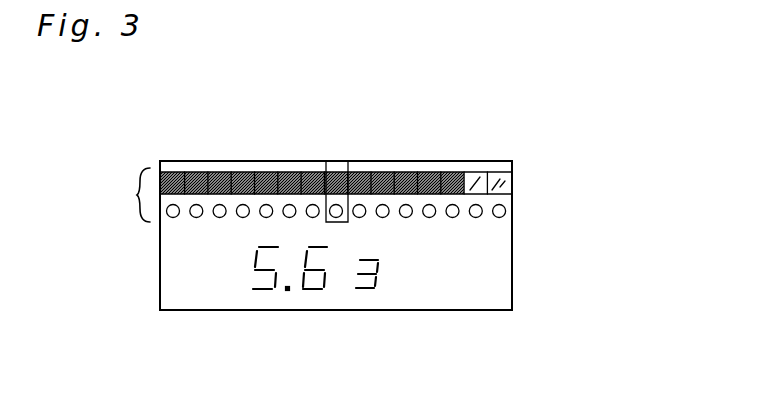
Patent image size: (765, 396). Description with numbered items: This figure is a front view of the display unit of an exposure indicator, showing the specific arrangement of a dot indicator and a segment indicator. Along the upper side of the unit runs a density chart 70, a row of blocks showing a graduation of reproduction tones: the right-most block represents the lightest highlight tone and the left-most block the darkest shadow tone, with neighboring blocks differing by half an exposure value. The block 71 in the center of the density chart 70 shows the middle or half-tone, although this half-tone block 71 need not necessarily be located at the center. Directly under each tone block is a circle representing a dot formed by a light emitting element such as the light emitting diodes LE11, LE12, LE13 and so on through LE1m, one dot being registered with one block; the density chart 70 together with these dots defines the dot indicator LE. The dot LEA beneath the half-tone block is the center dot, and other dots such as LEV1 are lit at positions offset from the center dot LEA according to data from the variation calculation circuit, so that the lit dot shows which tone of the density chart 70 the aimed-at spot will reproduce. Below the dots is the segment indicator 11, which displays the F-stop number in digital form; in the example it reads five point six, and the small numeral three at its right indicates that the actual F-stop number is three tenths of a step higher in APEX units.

The density chart 70 is at (507, 182).
The half-tone block 71 is at (338, 168).
The segment indicator 11 is at (267, 290).
The dot indicator LE is at (116, 195).
The light emitting diode LE11 is at (173, 204).
The light emitting diode LE12 is at (197, 218).
The light emitting diode LE13 is at (221, 204).
The dot LEV1 is at (290, 204).
The center dot LEA is at (338, 222).
The light emitting diode LE1m is at (499, 204).